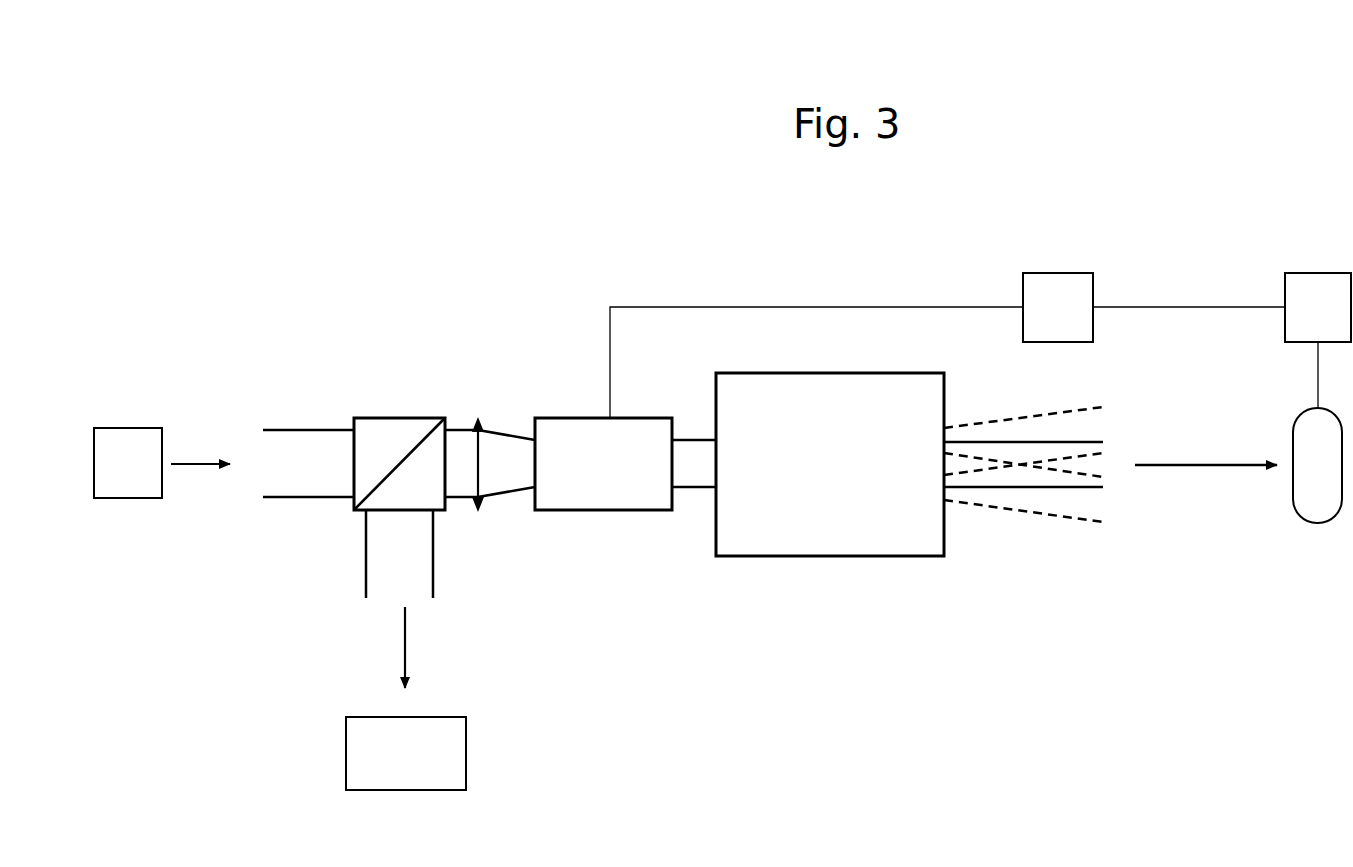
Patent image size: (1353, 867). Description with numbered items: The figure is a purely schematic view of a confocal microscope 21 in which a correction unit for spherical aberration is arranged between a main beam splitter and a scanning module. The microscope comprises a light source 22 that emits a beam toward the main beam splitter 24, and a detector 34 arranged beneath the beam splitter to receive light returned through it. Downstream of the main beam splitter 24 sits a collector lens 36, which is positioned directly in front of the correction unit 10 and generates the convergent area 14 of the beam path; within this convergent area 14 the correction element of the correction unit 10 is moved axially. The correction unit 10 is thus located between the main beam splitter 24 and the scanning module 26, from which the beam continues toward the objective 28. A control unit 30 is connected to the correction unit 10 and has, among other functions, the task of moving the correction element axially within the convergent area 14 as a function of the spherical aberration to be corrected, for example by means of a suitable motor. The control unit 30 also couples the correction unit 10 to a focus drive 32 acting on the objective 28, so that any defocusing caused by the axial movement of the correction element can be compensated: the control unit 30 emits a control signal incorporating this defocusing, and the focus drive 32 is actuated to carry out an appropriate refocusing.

The confocal microscope 21 is at (688, 230).
The light source 22 is at (156, 427).
The main beam splitter 24 is at (428, 418).
The collector lens 36 is at (483, 420).
The convergent area 14 is at (506, 500).
The correction unit 10 is at (614, 512).
The scanning module 26 is at (798, 372).
The control unit 30 is at (1050, 273).
The focus drive 32 is at (1298, 273).
The objective 28 is at (1296, 415).
The detector 34 is at (466, 763).